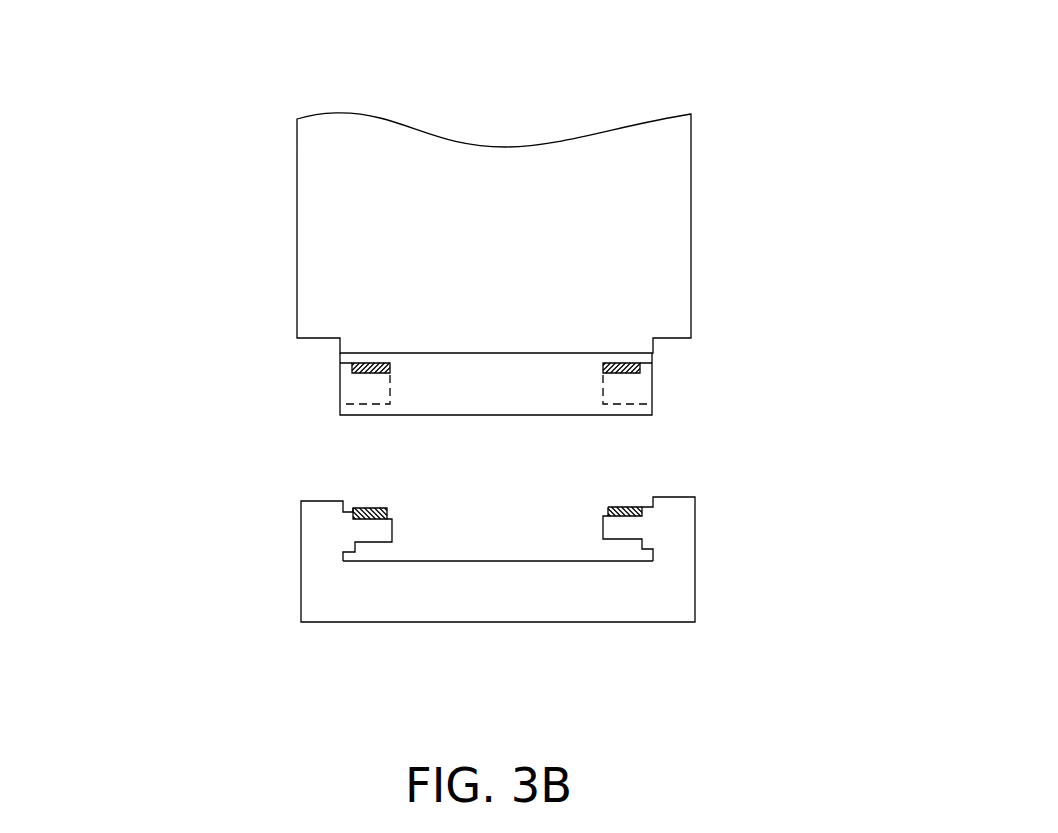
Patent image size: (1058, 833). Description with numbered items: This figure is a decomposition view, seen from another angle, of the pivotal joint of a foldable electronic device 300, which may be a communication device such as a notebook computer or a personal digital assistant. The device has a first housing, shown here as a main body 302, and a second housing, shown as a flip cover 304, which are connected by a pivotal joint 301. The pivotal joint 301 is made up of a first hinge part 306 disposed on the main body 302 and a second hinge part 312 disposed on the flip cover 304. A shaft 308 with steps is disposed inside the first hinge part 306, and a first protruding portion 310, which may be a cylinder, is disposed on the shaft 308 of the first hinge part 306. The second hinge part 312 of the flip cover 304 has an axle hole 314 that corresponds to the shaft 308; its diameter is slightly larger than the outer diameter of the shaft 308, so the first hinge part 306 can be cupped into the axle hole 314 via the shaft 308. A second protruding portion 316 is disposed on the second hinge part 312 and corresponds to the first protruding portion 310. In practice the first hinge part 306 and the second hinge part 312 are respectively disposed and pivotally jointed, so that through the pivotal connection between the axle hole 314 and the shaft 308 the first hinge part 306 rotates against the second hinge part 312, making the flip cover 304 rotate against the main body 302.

The foldable electronic device 300 is at (778, 29).
The pivotal joint 301 is at (97, 278).
The main body 302 is at (501, 604).
The flip cover 304 is at (658, 171).
The first hinge part 306 is at (313, 532).
The shaft 308 is at (373, 535).
The first protruding portion 310 is at (370, 508).
The second hinge part 312 is at (496, 370).
The axle hole 314 is at (350, 401).
The second protruding portion 316 is at (370, 362).